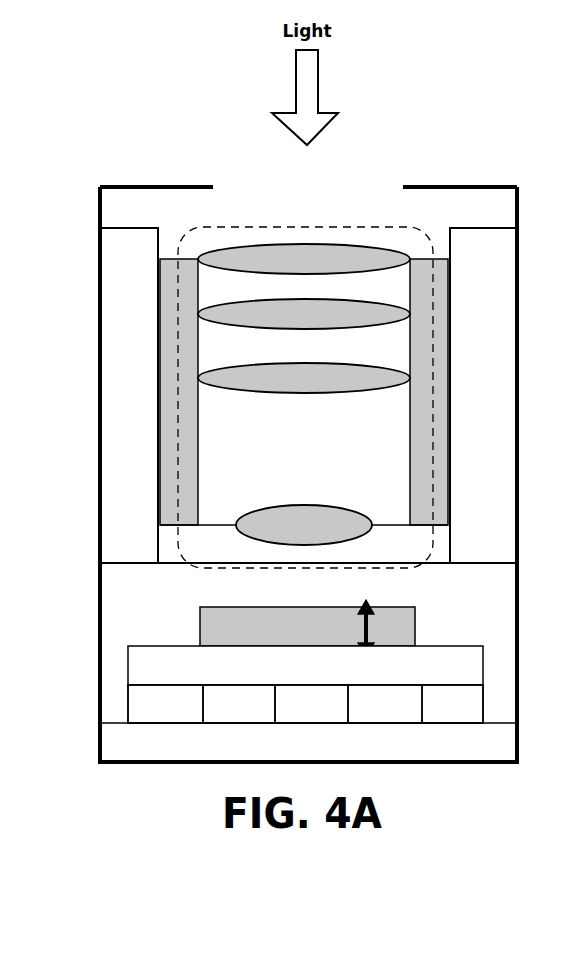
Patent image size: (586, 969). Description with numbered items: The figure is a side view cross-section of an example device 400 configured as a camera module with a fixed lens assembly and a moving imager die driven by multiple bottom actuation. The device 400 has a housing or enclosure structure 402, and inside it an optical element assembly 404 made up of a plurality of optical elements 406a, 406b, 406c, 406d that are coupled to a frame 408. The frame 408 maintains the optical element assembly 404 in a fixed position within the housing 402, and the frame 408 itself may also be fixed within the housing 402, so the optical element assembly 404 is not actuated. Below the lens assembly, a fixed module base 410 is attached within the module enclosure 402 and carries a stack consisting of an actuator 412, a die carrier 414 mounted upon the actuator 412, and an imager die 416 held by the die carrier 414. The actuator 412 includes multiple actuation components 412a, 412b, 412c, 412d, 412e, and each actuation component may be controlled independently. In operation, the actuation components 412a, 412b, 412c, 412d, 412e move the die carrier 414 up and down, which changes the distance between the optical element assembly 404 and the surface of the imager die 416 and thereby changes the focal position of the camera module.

The device 400 is at (490, 122).
The housing 402 is at (100, 208).
The optical element assembly 404 is at (335, 225).
The optical element 406a is at (304, 259).
The optical element 406b is at (304, 314).
The optical element 406c is at (304, 378).
The optical element 406d is at (304, 525).
The frame 408 is at (308, 395).
The module base 410 is at (308, 738).
The actuator 412 is at (356, 704).
The actuation component 412a is at (165, 704).
The actuation component 412b is at (239, 704).
The actuation component 412c is at (311, 704).
The actuation component 412d is at (385, 704).
The actuation component 412e is at (492, 707).
The die carrier 414 is at (305, 665).
The imager die 416 is at (307, 628).